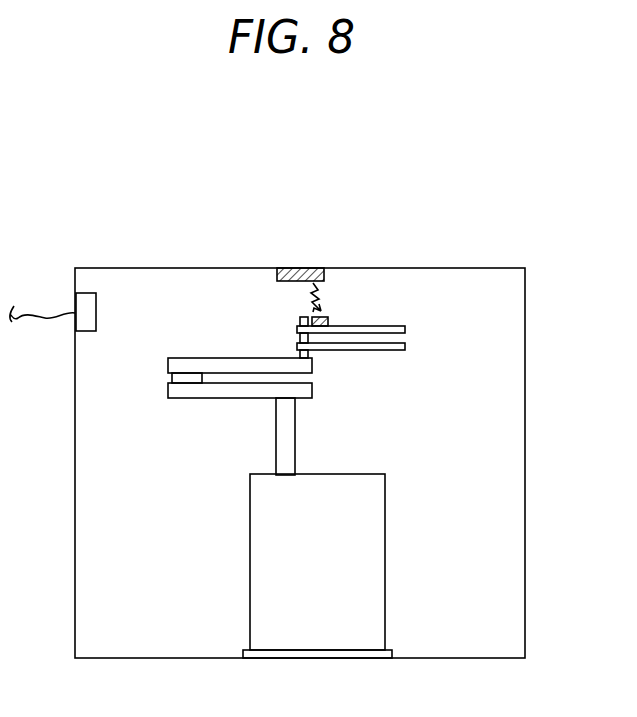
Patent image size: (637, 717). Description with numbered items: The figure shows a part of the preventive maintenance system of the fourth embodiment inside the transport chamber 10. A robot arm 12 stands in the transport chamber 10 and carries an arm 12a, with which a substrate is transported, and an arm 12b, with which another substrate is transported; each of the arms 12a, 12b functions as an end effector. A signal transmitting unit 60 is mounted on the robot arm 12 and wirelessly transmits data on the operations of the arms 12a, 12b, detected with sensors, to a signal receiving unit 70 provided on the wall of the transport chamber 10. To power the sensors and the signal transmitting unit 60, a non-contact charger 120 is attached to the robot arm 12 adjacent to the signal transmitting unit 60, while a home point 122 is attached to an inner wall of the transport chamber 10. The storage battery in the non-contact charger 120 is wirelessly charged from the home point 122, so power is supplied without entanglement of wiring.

The transport chamber 10 is at (433, 267).
The signal receiving unit 70 is at (87, 292).
The home point 122 is at (309, 267).
The non-contact charger 120 is at (330, 318).
The signal transmitting unit 60 is at (300, 319).
The arm 12a is at (405, 329).
The arm 12b is at (405, 346).
The robot arm 12 is at (308, 390).